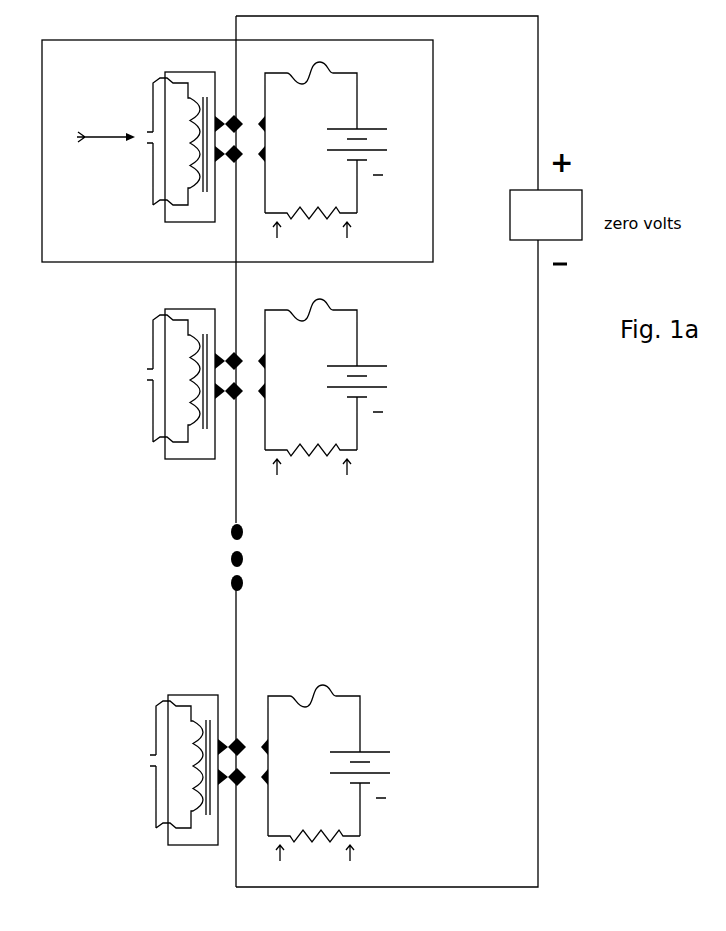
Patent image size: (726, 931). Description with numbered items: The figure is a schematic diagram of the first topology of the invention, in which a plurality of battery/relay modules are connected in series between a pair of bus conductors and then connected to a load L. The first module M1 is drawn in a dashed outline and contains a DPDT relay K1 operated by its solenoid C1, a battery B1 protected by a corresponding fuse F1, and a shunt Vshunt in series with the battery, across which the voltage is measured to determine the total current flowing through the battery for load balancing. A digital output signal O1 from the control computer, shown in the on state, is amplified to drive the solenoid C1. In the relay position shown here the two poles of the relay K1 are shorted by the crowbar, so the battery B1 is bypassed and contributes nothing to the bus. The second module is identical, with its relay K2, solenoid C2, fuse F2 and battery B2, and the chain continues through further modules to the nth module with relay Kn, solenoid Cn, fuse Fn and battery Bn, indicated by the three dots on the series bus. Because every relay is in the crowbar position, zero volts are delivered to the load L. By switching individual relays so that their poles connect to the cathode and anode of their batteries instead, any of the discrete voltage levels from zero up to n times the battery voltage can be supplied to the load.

The battery/relay module M1 is at (236, 143).
The load L is at (546, 215).
The digital output signal O1 is at (106, 161).
The DPDT relay K1 is at (206, 137).
The solenoid C1 is at (173, 141).
The fuse F1 is at (311, 131).
The battery B1 is at (371, 159).
The shunt Vshunt is at (312, 539).
The DPDT relay K2 is at (206, 374).
The solenoid C2 is at (173, 378).
The fuse F2 is at (311, 368).
The battery B2 is at (371, 396).
The DPDT relay Kn is at (209, 760).
The solenoid Cn is at (176, 764).
The fuse Fn is at (314, 754).
The battery Bn is at (376, 782).